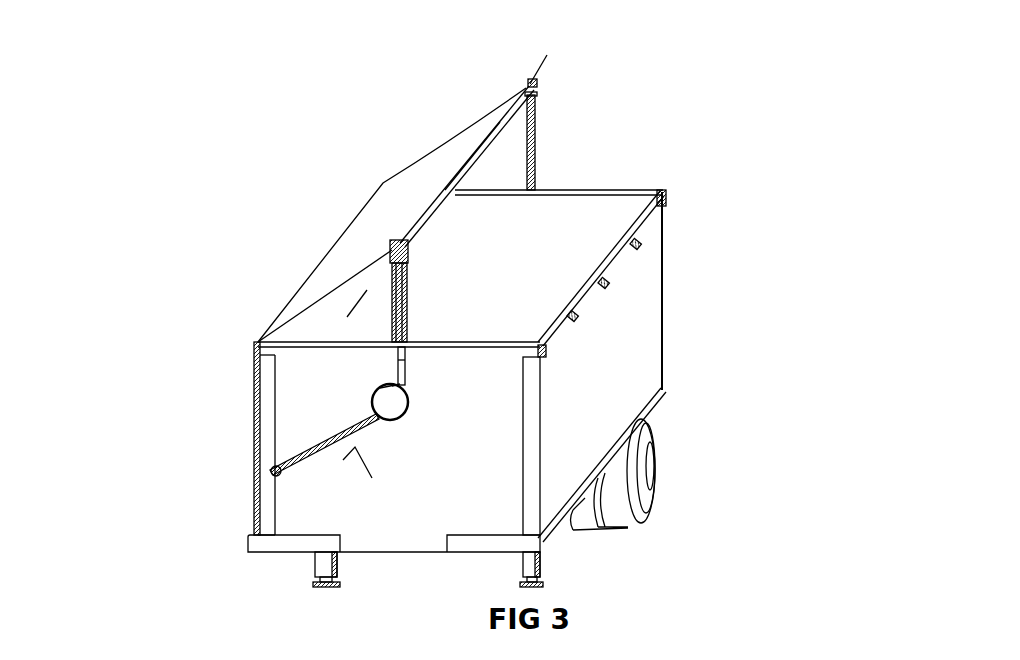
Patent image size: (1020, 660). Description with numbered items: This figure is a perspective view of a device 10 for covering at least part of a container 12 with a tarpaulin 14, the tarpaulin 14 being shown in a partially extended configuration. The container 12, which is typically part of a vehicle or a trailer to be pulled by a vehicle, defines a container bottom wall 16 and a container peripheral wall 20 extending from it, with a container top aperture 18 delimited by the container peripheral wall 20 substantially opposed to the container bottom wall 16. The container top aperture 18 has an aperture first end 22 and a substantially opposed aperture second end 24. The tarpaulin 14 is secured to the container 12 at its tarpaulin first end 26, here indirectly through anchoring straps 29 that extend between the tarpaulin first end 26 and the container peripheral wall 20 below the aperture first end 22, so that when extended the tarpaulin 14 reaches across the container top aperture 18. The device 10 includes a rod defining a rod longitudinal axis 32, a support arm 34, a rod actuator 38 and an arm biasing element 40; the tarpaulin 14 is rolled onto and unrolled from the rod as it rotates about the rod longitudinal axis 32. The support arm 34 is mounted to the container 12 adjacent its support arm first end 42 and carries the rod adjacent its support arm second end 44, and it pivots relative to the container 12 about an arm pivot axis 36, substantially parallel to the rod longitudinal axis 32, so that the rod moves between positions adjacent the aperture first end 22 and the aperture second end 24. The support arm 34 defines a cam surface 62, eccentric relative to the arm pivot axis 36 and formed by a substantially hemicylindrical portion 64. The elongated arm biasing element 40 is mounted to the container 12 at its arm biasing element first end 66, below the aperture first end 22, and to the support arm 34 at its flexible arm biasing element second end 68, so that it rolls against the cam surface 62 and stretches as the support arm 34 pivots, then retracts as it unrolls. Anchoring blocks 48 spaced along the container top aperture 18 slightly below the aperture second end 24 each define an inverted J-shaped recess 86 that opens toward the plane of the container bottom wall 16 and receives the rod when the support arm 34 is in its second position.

The device 10 is at (305, 250).
The container 12 is at (665, 270).
The tarpaulin 14 is at (262, 333).
The container bottom wall 16 is at (560, 528).
The container top aperture 18 is at (576, 190).
The container peripheral wall 20 is at (590, 410).
The aperture first end 22 is at (385, 183).
The aperture second end 24 is at (660, 189).
The tarpaulin first end 26 is at (283, 305).
The anchoring straps 29 is at (258, 373).
The rod longitudinal axis 32 is at (542, 63).
The support arm 34 is at (538, 128).
The arm pivot axis 36 is at (384, 493).
The rod actuator 38 is at (388, 242).
The arm biasing element 40 is at (305, 466).
The support arm first end 42 is at (410, 409).
The support arm second end 44 is at (527, 352).
The anchoring blocks 48 is at (636, 241).
The cam surface 62 is at (400, 418).
The hemicylindrical portion 64 is at (373, 400).
The arm biasing element first end 66 is at (275, 469).
The arm biasing element second end 68 is at (378, 410).
The recess 86 is at (630, 252).